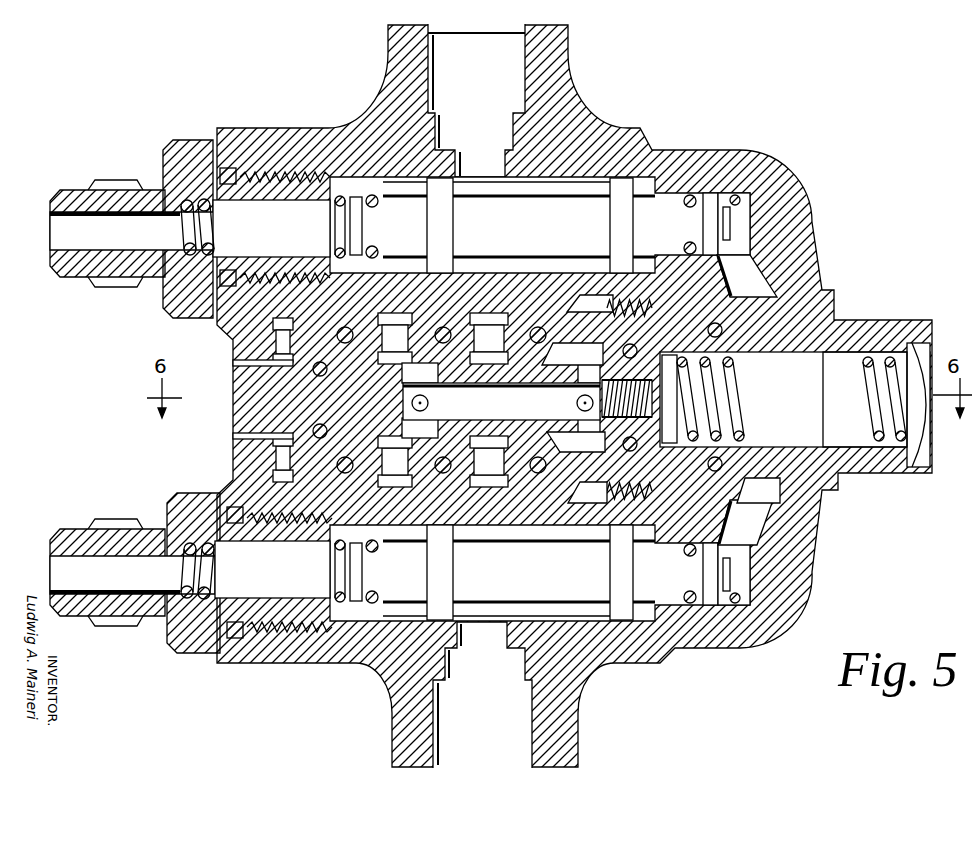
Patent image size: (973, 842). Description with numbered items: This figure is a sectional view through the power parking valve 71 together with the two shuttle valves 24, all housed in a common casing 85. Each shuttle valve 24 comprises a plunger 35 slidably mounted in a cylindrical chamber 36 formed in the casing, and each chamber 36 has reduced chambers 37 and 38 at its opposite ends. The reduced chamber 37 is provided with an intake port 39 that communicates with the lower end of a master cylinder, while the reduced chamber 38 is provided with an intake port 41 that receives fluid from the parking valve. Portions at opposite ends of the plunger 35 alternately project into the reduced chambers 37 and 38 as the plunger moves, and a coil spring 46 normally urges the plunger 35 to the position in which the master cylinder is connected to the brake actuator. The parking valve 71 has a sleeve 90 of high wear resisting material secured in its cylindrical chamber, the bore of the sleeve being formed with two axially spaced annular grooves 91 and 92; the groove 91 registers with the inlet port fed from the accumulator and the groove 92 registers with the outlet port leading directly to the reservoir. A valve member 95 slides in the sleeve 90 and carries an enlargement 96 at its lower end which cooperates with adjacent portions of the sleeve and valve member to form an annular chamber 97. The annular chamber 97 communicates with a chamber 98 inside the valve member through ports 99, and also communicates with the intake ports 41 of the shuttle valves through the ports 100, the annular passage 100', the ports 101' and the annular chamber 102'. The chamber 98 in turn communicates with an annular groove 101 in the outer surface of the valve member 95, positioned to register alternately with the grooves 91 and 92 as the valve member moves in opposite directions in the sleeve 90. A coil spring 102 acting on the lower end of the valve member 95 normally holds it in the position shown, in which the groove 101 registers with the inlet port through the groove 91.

The shuttle valve 24 is at (538, 390).
The plunger 35 is at (593, 210).
The cylindrical chamber 36 is at (580, 186).
The reduced chamber 37 is at (263, 207).
The reduced chamber 38 is at (737, 198).
The intake port 39 is at (100, 578).
The intake port 41 is at (753, 518).
The coil spring 46 is at (190, 204).
The parking valve 71 is at (866, 306).
The casing 85 is at (787, 173).
The sleeve 90 is at (305, 462).
The annular groove 91 is at (405, 438).
The annular groove 92 is at (497, 440).
The valve member 95 is at (293, 400).
The enlargement 96 is at (657, 427).
The annular chamber 97 is at (587, 466).
The chamber 98 is at (501, 401).
The port 99 is at (587, 422).
The port 100 is at (568, 454).
The annular passage 100' is at (604, 287).
The annular groove 101 is at (502, 412).
The port 101' is at (725, 378).
The coil spring 102 is at (808, 371).
The annular chamber 102' is at (693, 490).